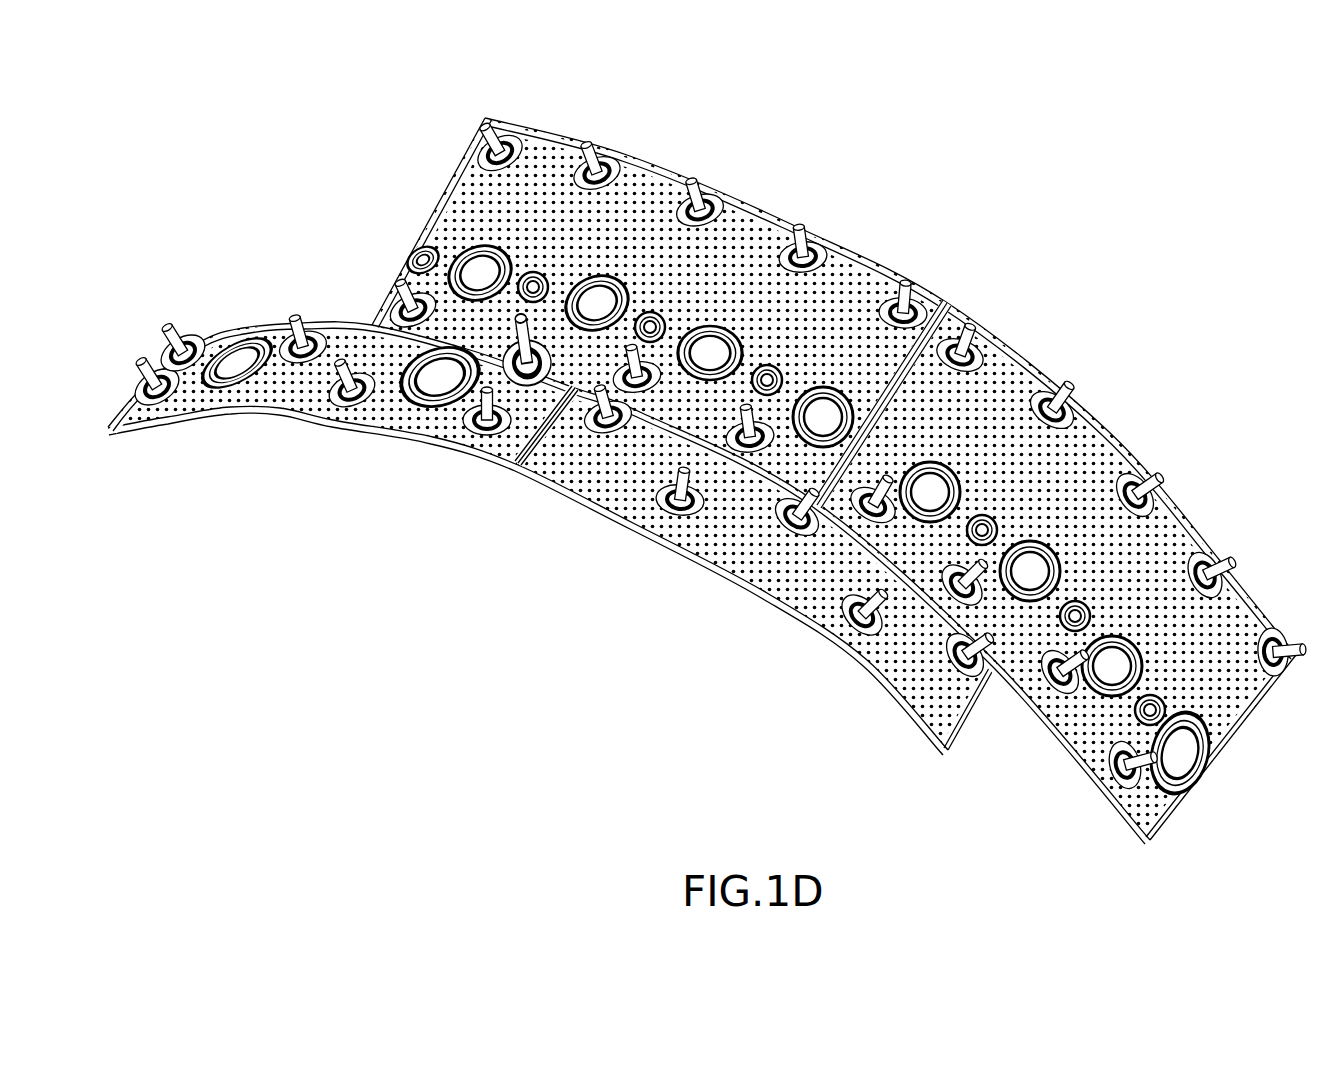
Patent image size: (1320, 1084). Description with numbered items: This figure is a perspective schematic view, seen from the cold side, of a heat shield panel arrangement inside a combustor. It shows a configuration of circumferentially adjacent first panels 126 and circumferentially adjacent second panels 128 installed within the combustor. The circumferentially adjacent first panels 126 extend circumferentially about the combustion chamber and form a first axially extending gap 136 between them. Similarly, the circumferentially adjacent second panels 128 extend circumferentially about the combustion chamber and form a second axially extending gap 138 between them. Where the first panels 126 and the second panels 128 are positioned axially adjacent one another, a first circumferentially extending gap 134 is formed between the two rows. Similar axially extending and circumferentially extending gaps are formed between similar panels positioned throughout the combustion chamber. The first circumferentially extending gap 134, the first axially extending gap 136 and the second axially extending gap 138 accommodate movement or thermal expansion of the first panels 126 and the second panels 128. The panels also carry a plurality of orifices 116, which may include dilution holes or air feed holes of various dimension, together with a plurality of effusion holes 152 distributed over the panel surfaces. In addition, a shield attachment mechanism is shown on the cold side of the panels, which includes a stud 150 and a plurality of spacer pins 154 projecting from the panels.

The second panels 128 is at (737, 182).
The first panels 126 is at (552, 555).
The first circumferentially extending gap 134 is at (370, 323).
The second axially extending gap 138 is at (946, 302).
The first axially extending gap 136 is at (518, 465).
The spacer pins 154 is at (840, 653).
The stud 150 is at (877, 675).
The effusion holes 152 is at (927, 680).
The orifices 116 is at (1112, 666).